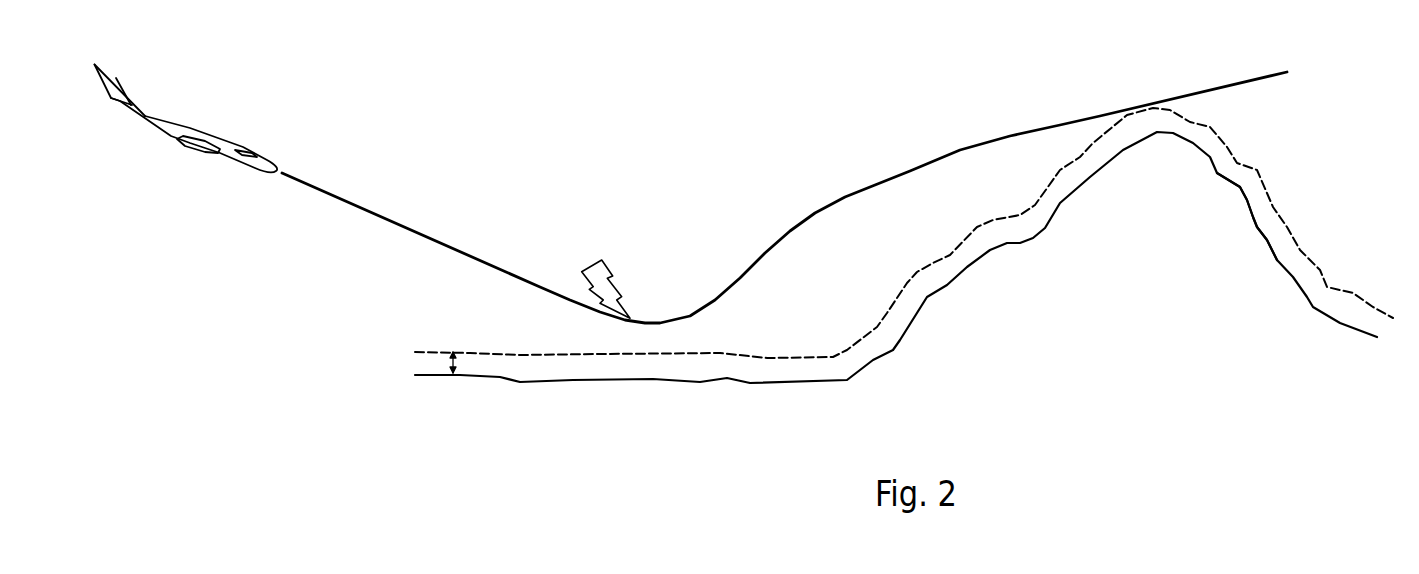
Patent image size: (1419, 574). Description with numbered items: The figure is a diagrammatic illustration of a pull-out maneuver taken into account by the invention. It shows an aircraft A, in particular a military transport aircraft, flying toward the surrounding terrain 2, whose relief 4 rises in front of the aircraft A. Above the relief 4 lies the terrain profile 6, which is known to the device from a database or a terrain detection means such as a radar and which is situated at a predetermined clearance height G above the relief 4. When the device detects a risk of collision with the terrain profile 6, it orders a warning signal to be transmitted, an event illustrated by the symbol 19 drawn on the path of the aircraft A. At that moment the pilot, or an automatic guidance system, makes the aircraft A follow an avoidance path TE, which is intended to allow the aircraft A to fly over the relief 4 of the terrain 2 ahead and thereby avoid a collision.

The aircraft A is at (217, 157).
The avoidance path TE is at (810, 213).
The symbol 19 is at (590, 270).
The terrain 2 is at (1028, 240).
The relief 4 is at (1252, 222).
The terrain profile 6 is at (1277, 213).
The clearance height G is at (445, 363).